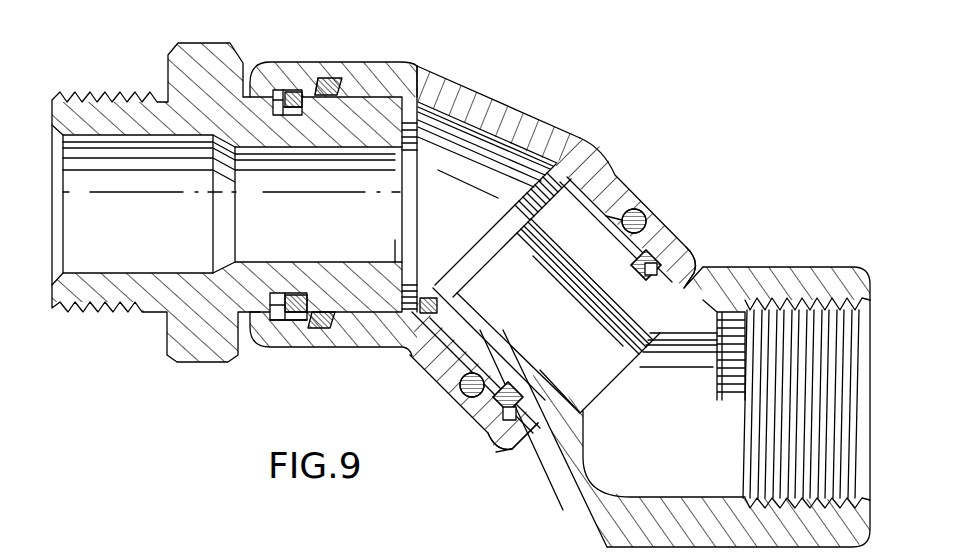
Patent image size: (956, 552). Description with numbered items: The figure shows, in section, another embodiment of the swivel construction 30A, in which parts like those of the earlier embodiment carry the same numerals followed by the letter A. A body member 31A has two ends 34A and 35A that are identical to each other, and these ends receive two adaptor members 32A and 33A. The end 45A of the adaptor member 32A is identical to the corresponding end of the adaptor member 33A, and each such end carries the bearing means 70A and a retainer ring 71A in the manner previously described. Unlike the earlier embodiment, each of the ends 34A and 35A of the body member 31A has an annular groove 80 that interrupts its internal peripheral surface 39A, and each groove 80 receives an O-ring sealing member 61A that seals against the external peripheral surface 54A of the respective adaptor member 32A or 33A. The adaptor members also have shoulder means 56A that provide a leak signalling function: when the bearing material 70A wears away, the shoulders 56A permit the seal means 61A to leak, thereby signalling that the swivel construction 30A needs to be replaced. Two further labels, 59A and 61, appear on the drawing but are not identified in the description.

The swivel construction 30A is at (544, 79).
The body member 31A is at (570, 130).
The adaptor member 32A is at (778, 270).
The adaptor member 33A is at (80, 96).
The end of body member 34A is at (262, 337).
The end of body member 35A is at (502, 448).
The internal peripheral surface 39A is at (385, 62).
The end of adaptor member 45A is at (580, 190).
The external peripheral surface 54A is at (307, 325).
The shoulder means 56A is at (332, 152).
The nut shoulder 59A is at (418, 74).
The backup ring 61 is at (332, 80).
The O-ring sealing member 61A is at (647, 222).
The bearing means 70A is at (292, 88).
The retainer ring 71A is at (273, 92).
The annular groove 80 is at (330, 86).